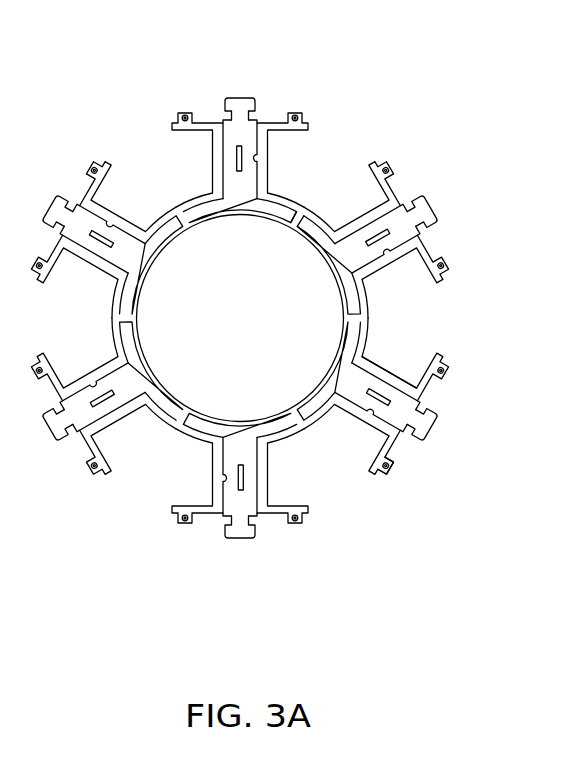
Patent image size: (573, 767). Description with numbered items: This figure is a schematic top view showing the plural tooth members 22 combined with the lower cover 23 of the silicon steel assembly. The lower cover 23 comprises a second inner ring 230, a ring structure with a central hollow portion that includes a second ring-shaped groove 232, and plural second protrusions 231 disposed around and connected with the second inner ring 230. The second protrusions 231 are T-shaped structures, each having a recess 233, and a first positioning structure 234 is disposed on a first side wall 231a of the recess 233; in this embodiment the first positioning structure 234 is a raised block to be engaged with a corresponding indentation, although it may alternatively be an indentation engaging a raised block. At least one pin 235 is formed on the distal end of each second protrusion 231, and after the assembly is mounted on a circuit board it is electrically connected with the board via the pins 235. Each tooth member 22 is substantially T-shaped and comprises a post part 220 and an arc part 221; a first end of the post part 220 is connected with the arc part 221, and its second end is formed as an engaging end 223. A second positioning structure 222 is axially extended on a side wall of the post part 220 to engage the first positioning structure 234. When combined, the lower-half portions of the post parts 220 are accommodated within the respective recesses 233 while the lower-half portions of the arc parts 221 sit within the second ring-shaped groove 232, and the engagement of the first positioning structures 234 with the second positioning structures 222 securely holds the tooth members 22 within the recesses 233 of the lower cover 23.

The tooth member 22 is at (231, 78).
The lower cover 23 is at (414, 193).
The post part 220 is at (382, 390).
The arc part 221 is at (338, 226).
The second positioning structure 222 is at (393, 240).
The engaging end 223 is at (418, 217).
The second inner ring 230 is at (307, 433).
The second protrusion 231 is at (408, 444).
The first side wall 231a is at (396, 425).
The second ring-shaped groove 232 is at (303, 215).
The recess 233 is at (381, 372).
The first positioning structure 234 is at (390, 254).
The pin 235 is at (452, 374).